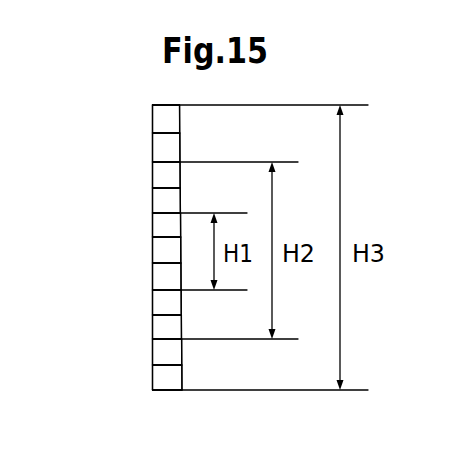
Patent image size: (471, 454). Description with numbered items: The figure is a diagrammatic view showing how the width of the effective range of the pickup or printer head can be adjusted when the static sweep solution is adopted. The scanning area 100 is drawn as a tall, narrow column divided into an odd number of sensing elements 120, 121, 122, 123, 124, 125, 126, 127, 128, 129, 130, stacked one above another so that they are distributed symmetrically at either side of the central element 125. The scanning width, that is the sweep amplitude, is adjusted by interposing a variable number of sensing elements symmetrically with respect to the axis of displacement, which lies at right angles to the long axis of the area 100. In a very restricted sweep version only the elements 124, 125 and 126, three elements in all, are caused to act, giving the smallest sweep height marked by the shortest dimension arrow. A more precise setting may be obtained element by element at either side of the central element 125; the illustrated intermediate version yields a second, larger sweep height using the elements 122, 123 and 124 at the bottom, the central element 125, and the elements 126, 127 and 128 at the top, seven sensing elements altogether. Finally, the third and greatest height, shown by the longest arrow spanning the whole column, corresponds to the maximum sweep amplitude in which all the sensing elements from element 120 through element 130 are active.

The area 100 is at (188, 358).
The sensing element 120 is at (173, 383).
The sensing element 121 is at (162, 352).
The sensing element 122 is at (162, 327).
The sensing element 123 is at (162, 302).
The sensing element 124 is at (162, 276).
The central element 125 is at (162, 250).
The sensing element 126 is at (162, 225).
The sensing element 127 is at (162, 200).
The sensing element 128 is at (162, 175).
The sensing element 129 is at (162, 148).
The sensing element 130 is at (162, 119).